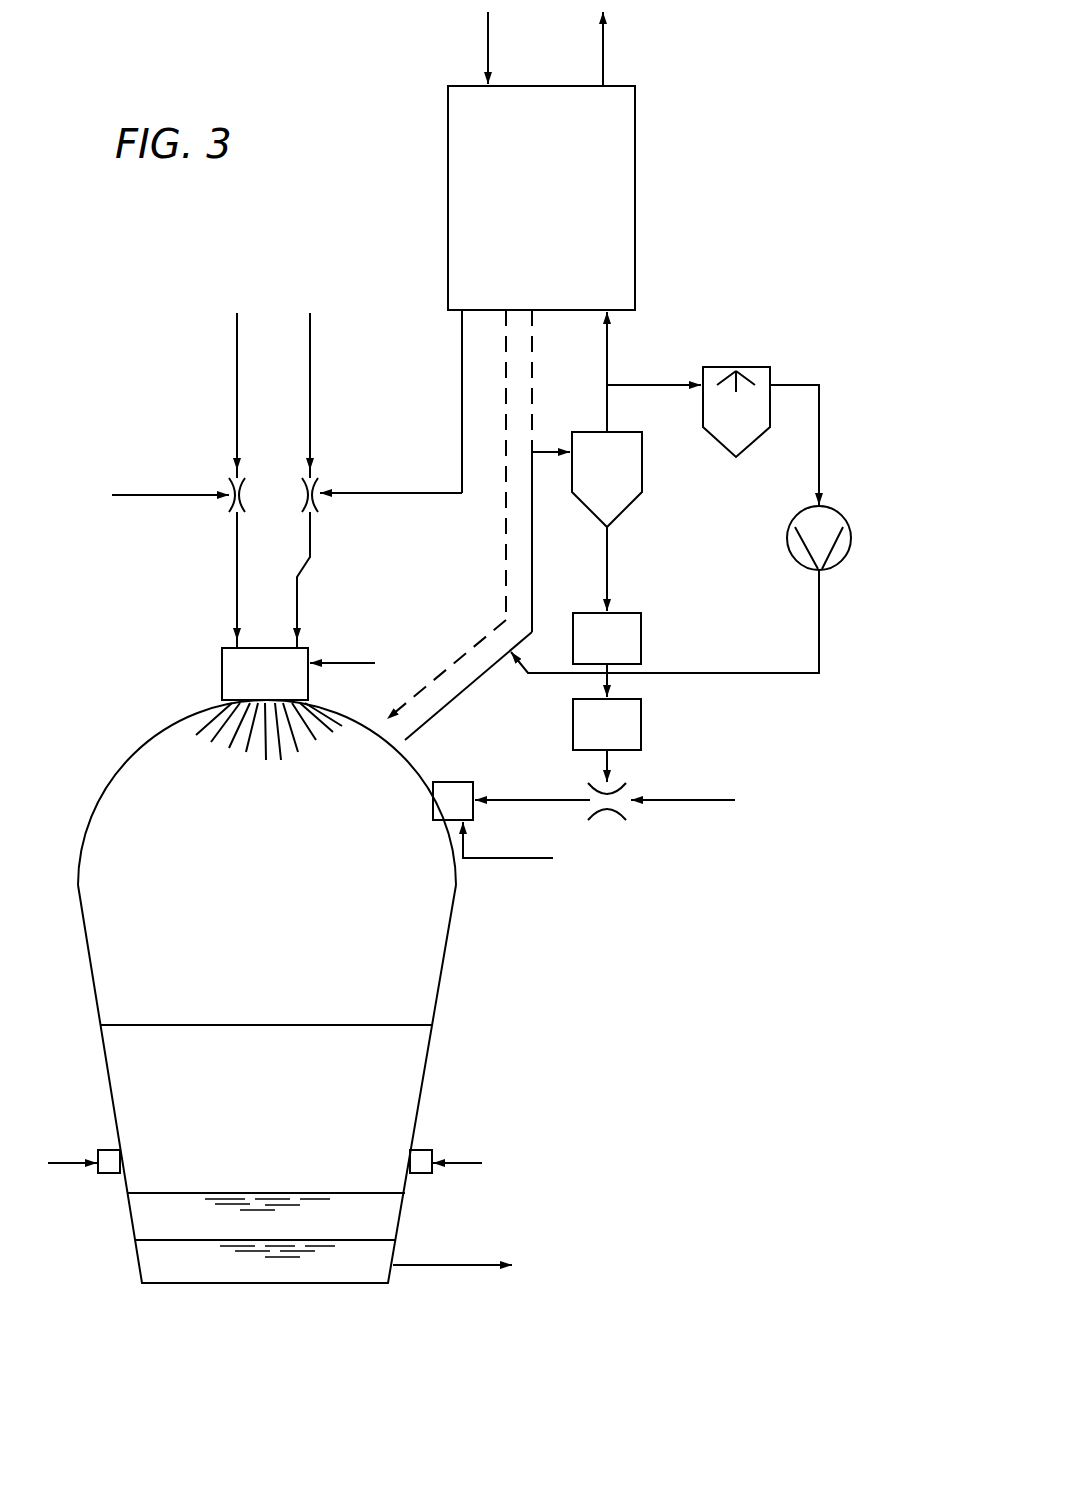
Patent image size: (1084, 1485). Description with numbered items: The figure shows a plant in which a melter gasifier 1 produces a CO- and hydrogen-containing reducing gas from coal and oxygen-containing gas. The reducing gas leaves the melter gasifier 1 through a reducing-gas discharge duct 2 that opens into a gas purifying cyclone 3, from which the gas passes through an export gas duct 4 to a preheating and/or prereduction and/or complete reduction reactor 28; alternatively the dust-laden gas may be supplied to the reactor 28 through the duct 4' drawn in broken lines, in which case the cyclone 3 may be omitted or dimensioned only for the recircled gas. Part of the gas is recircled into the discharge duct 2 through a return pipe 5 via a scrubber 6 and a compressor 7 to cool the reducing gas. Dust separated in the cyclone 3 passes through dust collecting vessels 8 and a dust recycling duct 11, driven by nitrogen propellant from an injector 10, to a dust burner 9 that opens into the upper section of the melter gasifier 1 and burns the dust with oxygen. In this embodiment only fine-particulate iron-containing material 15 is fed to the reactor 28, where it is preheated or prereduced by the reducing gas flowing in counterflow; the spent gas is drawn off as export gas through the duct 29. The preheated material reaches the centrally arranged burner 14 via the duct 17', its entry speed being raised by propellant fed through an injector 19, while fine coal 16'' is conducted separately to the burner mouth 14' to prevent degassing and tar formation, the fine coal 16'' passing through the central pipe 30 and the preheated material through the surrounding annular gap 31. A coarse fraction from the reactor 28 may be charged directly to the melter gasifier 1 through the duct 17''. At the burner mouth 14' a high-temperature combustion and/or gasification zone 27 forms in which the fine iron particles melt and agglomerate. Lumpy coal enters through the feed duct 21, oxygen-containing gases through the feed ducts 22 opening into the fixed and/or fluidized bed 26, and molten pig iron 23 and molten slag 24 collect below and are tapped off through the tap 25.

The melter gasifier 1 is at (445, 988).
The reducing-gas discharge duct 2 is at (433, 717).
The gas purifying cyclone 3 is at (632, 505).
The export gas duct 4 is at (654, 371).
The duct 4' is at (557, 471).
The return pipe 5 is at (821, 427).
The scrubber 6 is at (772, 368).
The compressor 7 is at (837, 565).
The dust collecting vessel 8 is at (616, 661).
The dust burner 9 is at (455, 790).
The injector 10 is at (605, 812).
The dust recycling duct 11 is at (532, 798).
The burner 14 is at (314, 651).
The burner mouth 14' is at (278, 752).
The fine-particulate iron-containing material 15 is at (485, 42).
The fine coal 16'' is at (170, 458).
The duct 17' is at (391, 401).
The duct 17'' is at (446, 514).
The injector 19 is at (301, 483).
The feed duct 21 is at (131, 729).
The feed ducts 22 is at (97, 1155).
The molten pig iron 23 is at (194, 1285).
The molten slag 24 is at (180, 1239).
The tap 25 is at (445, 1265).
The fixed bed and/or fluidized bed 26 is at (276, 1123).
The high-temperature combustion and/or gasification zone 27 is at (243, 708).
The preheating and/or prereduction and/or complete reduction reactor 28 is at (637, 205).
The duct 29 is at (605, 60).
The central pipe 30 is at (237, 578).
The annular gap 31 is at (297, 580).